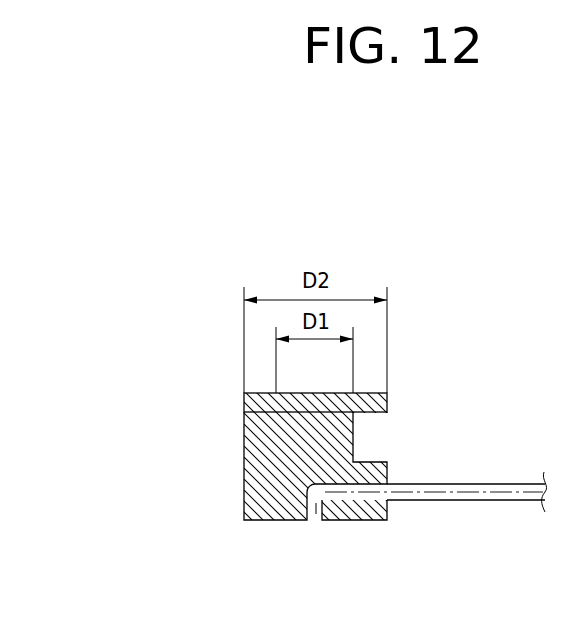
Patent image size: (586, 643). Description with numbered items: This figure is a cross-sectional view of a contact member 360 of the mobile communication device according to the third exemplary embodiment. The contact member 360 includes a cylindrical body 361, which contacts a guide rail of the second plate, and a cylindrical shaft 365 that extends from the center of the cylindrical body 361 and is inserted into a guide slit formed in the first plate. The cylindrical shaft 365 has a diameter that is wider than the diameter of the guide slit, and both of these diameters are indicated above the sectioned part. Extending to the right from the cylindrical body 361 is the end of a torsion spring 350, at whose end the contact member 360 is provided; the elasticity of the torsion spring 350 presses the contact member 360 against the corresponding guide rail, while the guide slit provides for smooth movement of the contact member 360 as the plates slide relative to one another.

The contact member 360 is at (77, 412).
The cylindrical shaft 365 is at (258, 402).
The cylindrical body 361 is at (258, 495).
The torsion spring 350 is at (505, 500).